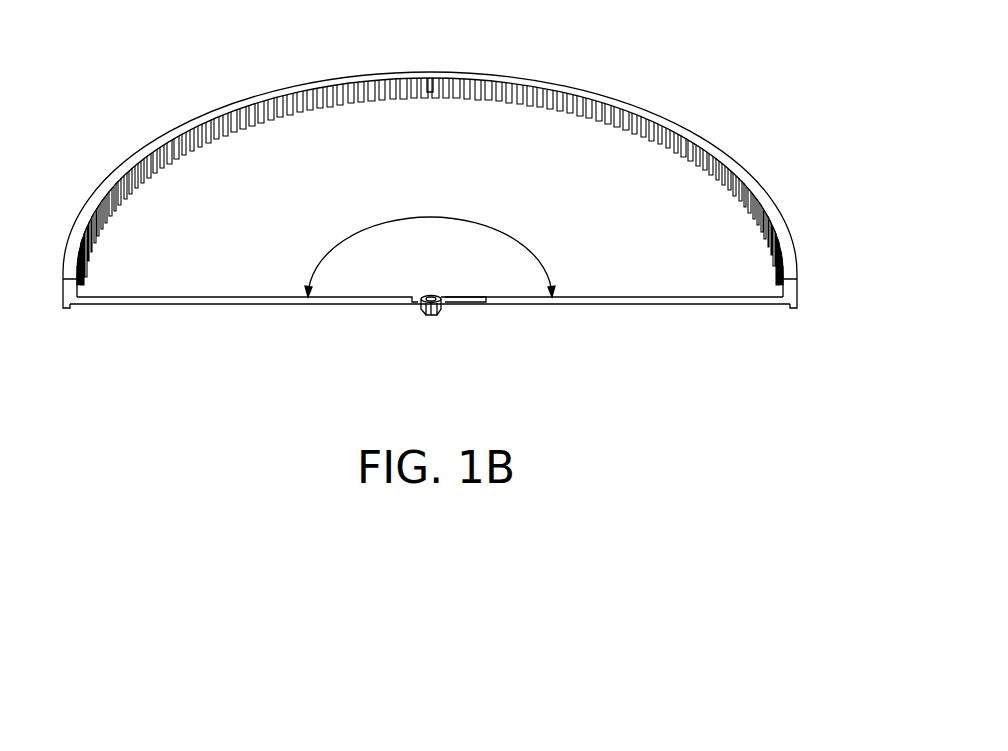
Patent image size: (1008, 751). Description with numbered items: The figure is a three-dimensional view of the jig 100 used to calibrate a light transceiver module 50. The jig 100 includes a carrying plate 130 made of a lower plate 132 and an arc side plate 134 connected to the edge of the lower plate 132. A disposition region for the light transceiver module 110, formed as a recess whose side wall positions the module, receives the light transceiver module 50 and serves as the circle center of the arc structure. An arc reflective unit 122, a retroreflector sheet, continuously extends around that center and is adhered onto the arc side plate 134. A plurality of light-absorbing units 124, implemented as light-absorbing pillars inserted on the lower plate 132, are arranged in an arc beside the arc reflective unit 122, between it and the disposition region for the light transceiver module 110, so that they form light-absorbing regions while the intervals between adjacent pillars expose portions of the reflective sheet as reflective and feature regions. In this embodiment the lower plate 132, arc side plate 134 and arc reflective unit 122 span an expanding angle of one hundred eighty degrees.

The jig 100 is at (461, 201).
The disposition region for the light transceiver module 110 is at (420, 292).
The arc reflective unit 122 is at (430, 78).
The light-absorbing units 124 is at (640, 116).
The carrying plate 130 is at (461, 157).
The lower plate 132 is at (438, 170).
The arc side plate 134 is at (702, 143).
The light transceiver module 50 is at (431, 316).